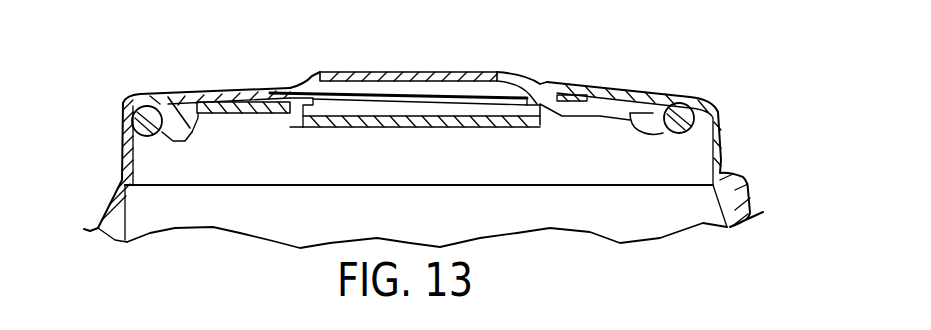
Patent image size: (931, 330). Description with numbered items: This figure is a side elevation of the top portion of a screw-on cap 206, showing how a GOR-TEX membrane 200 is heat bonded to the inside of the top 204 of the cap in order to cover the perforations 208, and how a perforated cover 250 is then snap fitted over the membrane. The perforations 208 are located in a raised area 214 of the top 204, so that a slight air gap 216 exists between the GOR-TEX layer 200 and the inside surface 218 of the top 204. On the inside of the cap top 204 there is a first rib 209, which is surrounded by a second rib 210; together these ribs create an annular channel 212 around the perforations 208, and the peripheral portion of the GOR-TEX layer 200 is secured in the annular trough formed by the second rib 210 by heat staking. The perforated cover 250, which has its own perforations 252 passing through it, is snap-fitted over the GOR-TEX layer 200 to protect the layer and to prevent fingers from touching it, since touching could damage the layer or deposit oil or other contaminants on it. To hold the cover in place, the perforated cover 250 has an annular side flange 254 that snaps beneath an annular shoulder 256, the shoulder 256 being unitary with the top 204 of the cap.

The GOR-TEX membrane 200 is at (413, 100).
The top 204 is at (242, 88).
The screw-on cap 206 is at (131, 90).
The perforations 208 is at (340, 72).
The first rib 209 is at (294, 117).
The second rib 210 is at (573, 90).
The annular channel 212 is at (242, 113).
The raised area 214 is at (497, 72).
The air gap 216 is at (367, 93).
The inside surface 218 is at (513, 82).
The perforated cover 250 is at (340, 130).
The perforations 252 is at (358, 128).
The annular side flange 254 is at (225, 118).
The annular shoulder 256 is at (630, 120).